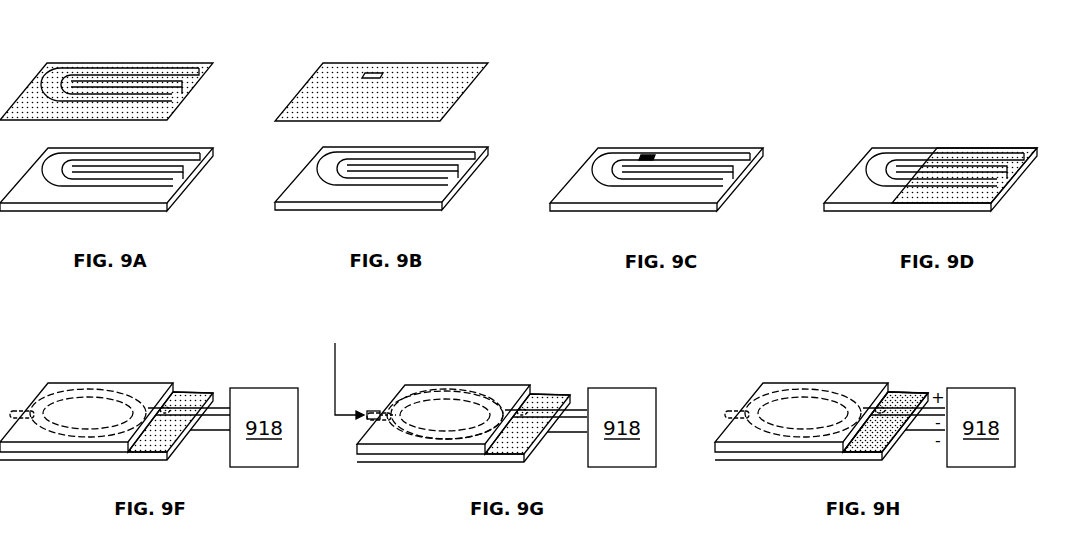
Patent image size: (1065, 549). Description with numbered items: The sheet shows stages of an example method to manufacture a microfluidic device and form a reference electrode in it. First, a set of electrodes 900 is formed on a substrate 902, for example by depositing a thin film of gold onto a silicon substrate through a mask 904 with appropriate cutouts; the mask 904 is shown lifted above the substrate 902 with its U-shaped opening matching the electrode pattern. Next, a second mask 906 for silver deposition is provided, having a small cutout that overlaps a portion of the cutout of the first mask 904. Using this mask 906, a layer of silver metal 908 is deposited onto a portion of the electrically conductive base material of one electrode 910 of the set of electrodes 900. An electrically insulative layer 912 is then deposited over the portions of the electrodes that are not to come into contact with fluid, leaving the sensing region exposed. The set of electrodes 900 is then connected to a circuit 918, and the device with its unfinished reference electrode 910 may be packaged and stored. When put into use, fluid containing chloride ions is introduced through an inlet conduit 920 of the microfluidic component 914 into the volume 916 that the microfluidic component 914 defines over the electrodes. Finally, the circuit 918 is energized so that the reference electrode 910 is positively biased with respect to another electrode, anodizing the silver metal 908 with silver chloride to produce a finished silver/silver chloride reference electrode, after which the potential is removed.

In FIG. 9A, the set of electrodes 900 is at (128, 180).
In FIG. 9F, the set of electrodes 900 is at (192, 394).
In FIG. 9H, the set of electrodes 900 is at (844, 400).
In FIG. 9A, the substrate 902 is at (146, 210).
In FIG. 9A, the mask 904 is at (193, 72).
In FIG. 9B, the mask 906 is at (454, 72).
In FIG. 9C, the layer of silver metal 908 is at (647, 156).
In FIG. 9C, the electrode 910 is at (718, 153).
In FIG. 9H, the electrode 910 is at (906, 400).
In FIG. 9D, the electrically insulative layer 912 is at (957, 150).
In FIG. 9G, the microfluidic component 914 is at (503, 390).
In FIG. 9G, the volume 916 is at (450, 392).
In FIG. 9F, the circuit 918 is at (264, 427).
In FIG. 9G, the circuit 918 is at (622, 427).
In FIG. 9H, the circuit 918 is at (981, 427).
In FIG. 9G, the inlet conduit 920 is at (374, 408).